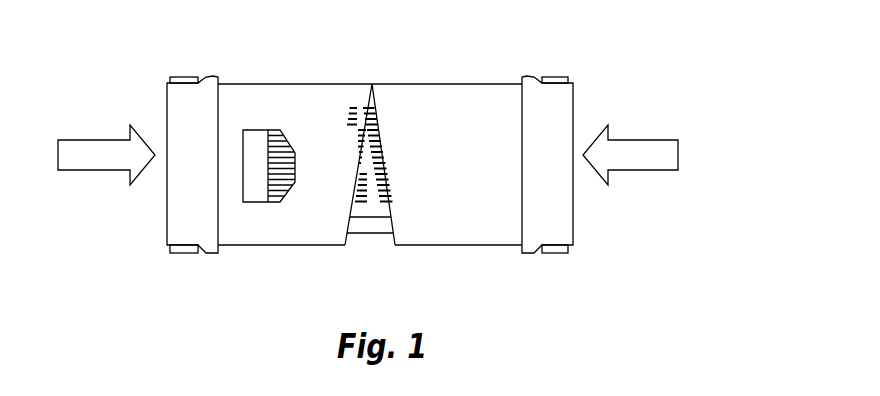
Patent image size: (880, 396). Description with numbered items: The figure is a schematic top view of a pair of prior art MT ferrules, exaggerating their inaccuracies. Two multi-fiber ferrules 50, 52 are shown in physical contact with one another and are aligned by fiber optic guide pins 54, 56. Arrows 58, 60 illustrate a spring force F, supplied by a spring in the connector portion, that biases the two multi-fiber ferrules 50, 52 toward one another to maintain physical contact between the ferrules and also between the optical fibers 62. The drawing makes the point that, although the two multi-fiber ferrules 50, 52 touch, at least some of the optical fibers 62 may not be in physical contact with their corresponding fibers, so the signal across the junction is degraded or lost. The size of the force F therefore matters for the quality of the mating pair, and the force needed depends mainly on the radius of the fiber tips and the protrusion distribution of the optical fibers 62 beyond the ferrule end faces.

The multi-fiber ferrule 50 is at (292, 84).
The multi-fiber ferrule 52 is at (487, 84).
The fiber optic guide pin 54 is at (374, 84).
The fiber optic guide pin 56 is at (378, 234).
The arrow 58 is at (648, 140).
The arrow 60 is at (76, 140).
The optical fibers 62 is at (362, 234).